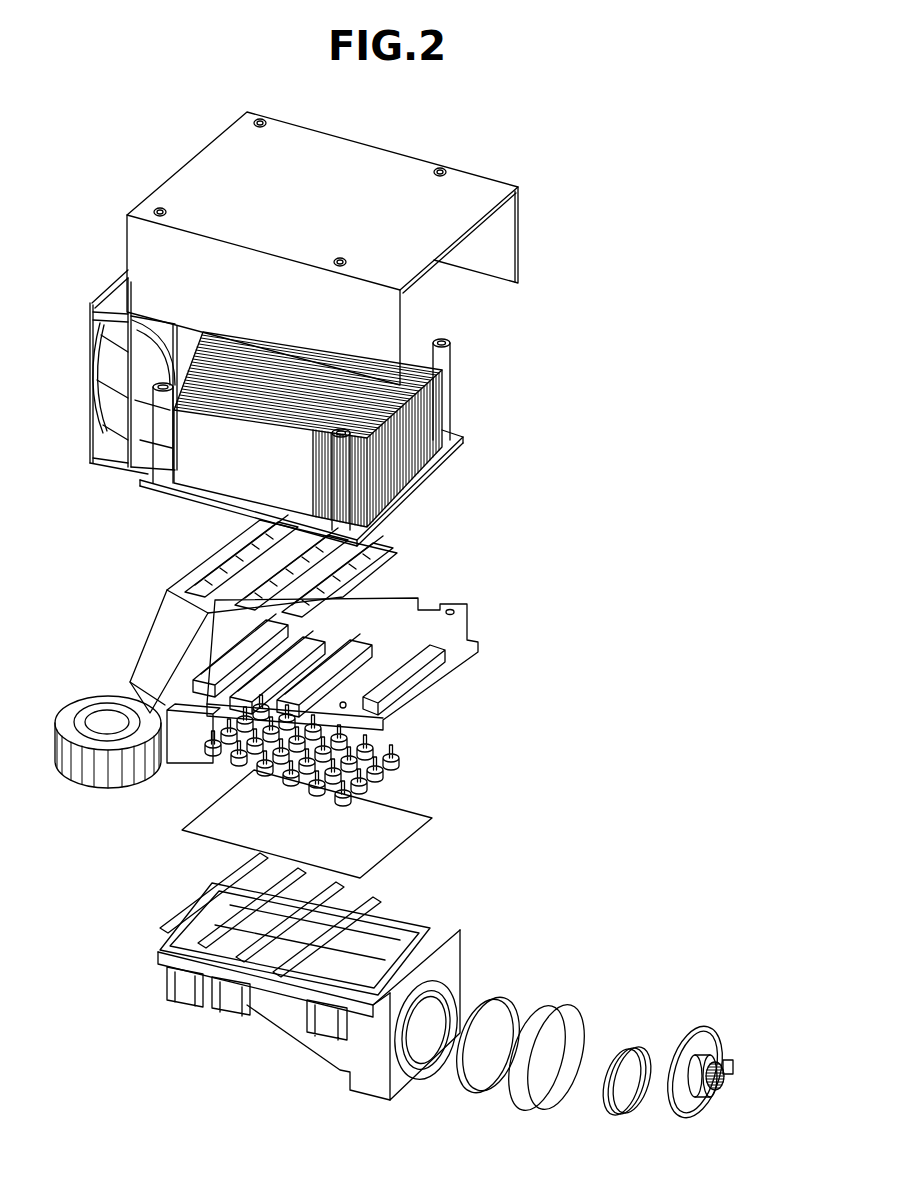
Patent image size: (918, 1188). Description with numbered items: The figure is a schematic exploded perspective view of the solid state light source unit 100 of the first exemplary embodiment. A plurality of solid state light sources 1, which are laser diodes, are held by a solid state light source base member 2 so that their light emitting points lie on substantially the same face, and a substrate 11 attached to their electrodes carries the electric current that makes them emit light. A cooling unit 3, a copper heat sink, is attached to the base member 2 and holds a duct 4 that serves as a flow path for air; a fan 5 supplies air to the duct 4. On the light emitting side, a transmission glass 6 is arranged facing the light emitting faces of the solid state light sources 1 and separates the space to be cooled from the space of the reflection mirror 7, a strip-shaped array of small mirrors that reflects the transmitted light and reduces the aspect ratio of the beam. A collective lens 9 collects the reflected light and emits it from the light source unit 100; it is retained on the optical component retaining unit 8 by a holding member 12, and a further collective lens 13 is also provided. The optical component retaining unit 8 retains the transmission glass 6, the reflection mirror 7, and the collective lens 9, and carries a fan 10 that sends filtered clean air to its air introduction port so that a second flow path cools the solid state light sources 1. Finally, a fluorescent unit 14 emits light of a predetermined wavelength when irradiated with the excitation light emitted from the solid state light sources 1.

The solid state light source unit 100 is at (102, 100).
The solid state light sources 1 is at (400, 748).
The solid state light source base member 2 is at (397, 615).
The cooling unit 3 is at (422, 413).
The duct 4 is at (470, 185).
The fan 5 is at (92, 422).
The transmission glass 6 is at (215, 815).
The reflection mirror 7 is at (250, 890).
The optical component retaining unit 8 is at (160, 975).
The collective lens 9 is at (483, 1080).
The fan 10 is at (92, 778).
The substrate 11 is at (177, 657).
The holding member 12 is at (545, 1107).
The collective lens 13 is at (630, 1108).
The fluorescent unit 14 is at (688, 1107).